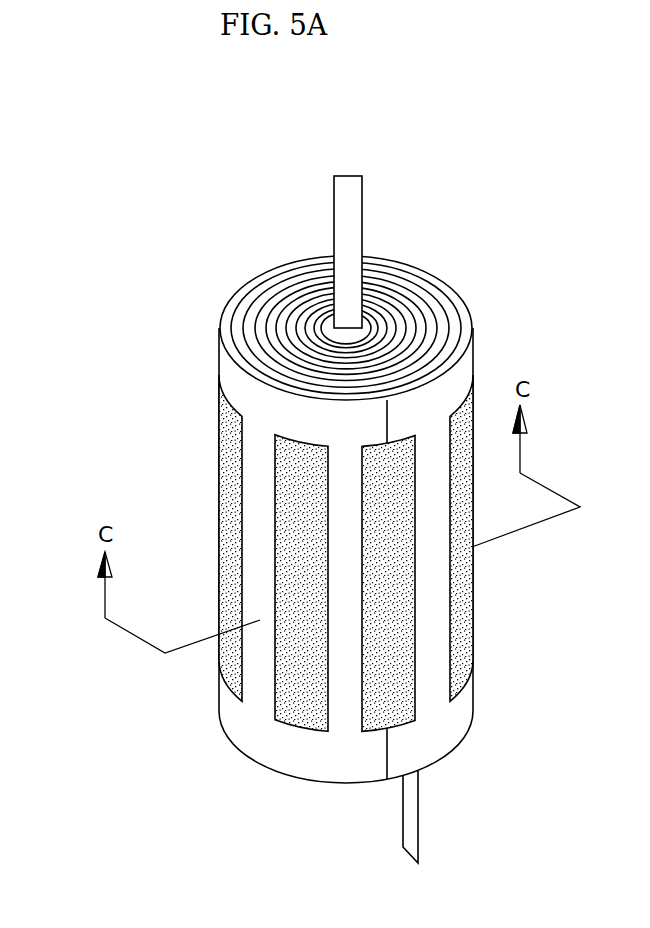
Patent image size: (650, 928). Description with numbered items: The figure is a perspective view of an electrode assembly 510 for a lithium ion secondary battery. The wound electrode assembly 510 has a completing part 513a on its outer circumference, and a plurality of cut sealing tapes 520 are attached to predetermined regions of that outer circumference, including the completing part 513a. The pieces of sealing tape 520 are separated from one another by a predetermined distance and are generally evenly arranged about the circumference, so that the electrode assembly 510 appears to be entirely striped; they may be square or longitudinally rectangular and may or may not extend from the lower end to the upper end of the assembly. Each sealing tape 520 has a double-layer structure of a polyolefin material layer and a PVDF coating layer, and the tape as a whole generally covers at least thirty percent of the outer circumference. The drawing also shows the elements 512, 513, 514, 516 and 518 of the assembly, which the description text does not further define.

The electrode assembly 510 is at (148, 153).
The first electrode plate 512 is at (460, 348).
The separator 513 is at (455, 328).
The completing part 513a is at (385, 755).
The second electrode plate 514 is at (438, 303).
The first electrode tab 516 is at (349, 190).
The second electrode tab 518 is at (410, 808).
The sealing tape 520 is at (473, 617).